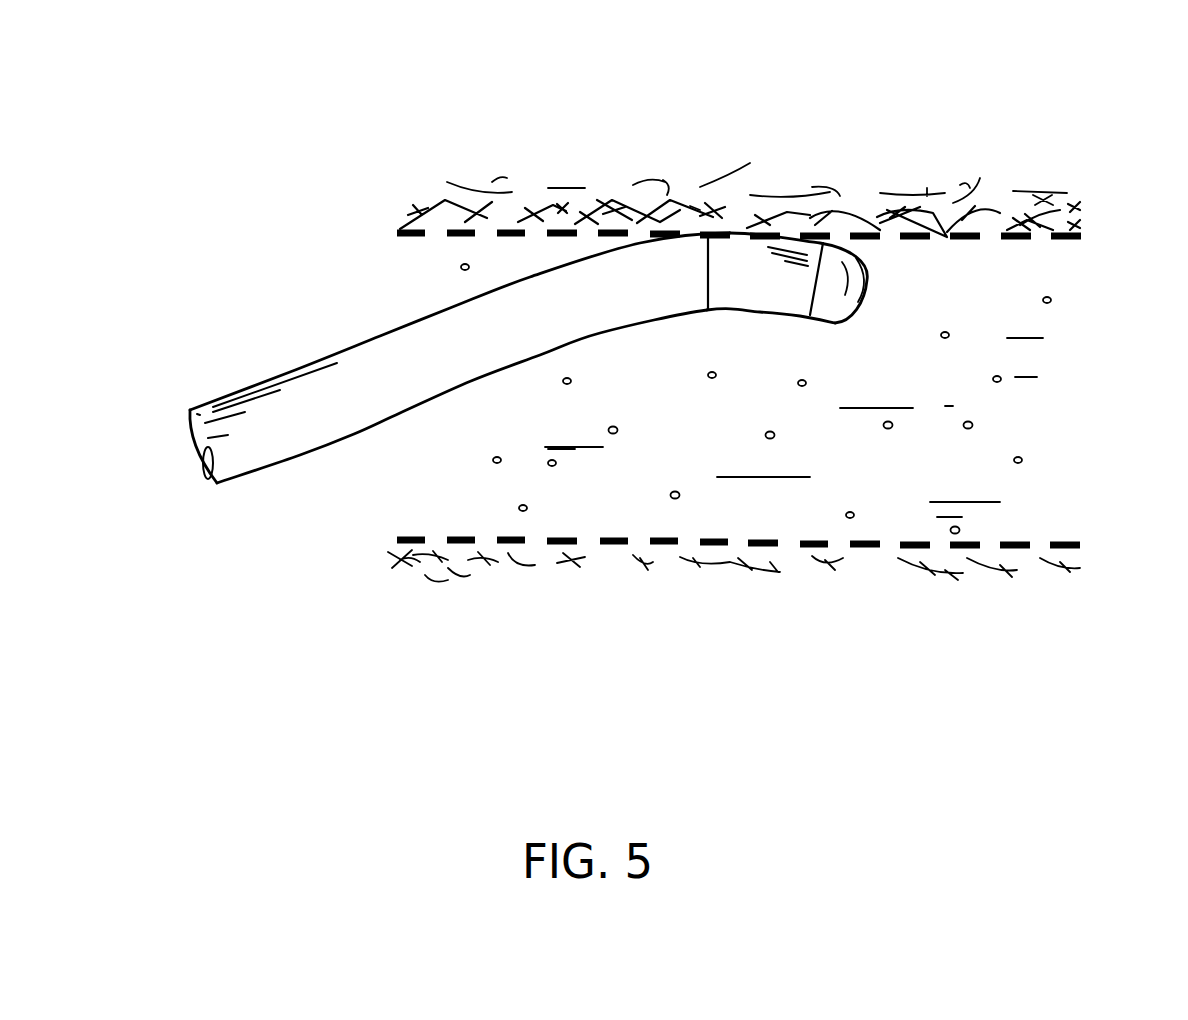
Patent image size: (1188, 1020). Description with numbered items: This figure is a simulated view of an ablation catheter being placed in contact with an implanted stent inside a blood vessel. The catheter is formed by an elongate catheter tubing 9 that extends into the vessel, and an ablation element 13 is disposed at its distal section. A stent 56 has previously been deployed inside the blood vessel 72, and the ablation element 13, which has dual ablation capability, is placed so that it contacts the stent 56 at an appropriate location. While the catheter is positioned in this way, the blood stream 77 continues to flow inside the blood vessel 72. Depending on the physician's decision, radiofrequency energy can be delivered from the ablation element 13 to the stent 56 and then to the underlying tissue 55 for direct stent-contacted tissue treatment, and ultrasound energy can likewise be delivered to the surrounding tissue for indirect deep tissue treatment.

The elongate catheter tubing 9 is at (298, 365).
The ablation element 13 is at (760, 253).
The underlying tissue 55 is at (1047, 178).
The implanted stent 56 is at (1073, 542).
The blood vessel 72 is at (416, 182).
The blood stream 77 is at (1037, 366).